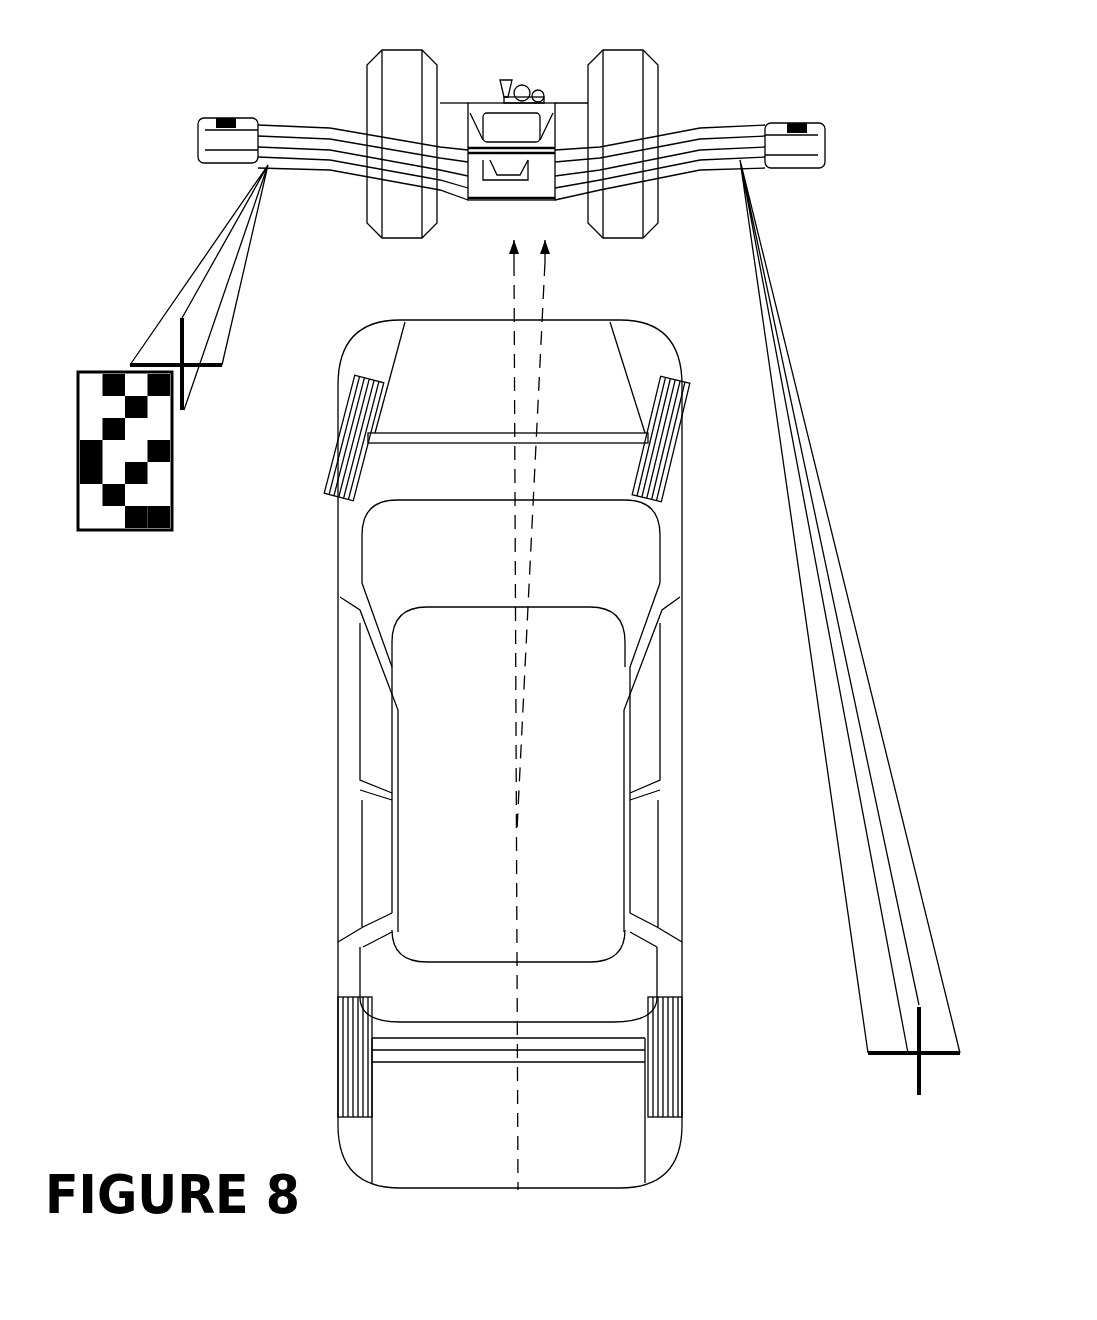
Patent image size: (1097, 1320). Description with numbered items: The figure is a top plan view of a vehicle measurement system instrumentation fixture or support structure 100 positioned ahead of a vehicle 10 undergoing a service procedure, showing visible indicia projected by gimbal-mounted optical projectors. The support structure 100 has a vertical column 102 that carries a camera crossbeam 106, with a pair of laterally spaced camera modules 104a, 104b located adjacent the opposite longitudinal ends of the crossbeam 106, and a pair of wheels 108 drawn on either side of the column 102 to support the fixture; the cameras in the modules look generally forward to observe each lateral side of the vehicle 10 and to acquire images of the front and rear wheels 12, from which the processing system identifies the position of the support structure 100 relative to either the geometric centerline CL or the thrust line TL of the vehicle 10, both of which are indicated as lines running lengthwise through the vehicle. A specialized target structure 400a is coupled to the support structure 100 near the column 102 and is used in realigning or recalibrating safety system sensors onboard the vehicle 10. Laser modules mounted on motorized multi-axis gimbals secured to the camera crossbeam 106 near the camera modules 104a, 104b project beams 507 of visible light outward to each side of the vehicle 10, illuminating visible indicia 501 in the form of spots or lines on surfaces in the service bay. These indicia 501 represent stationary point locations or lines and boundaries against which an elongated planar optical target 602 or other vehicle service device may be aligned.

The support structure 100 is at (300, 76).
The vertical column 102 is at (535, 101).
The camera module 104a is at (797, 134).
The camera module 104b is at (230, 133).
The camera crossbeam 106 is at (670, 140).
The wheel 108 is at (619, 108).
The target structure 400a is at (532, 202).
The vehicle 10 is at (705, 886).
The wheels 12 is at (325, 413).
The visible indicia 501 is at (175, 358).
The beams 507 is at (190, 270).
The elongated planar optical target 602 is at (172, 537).
The geometric centerline CL is at (506, 643).
The thrust line TL is at (534, 681).